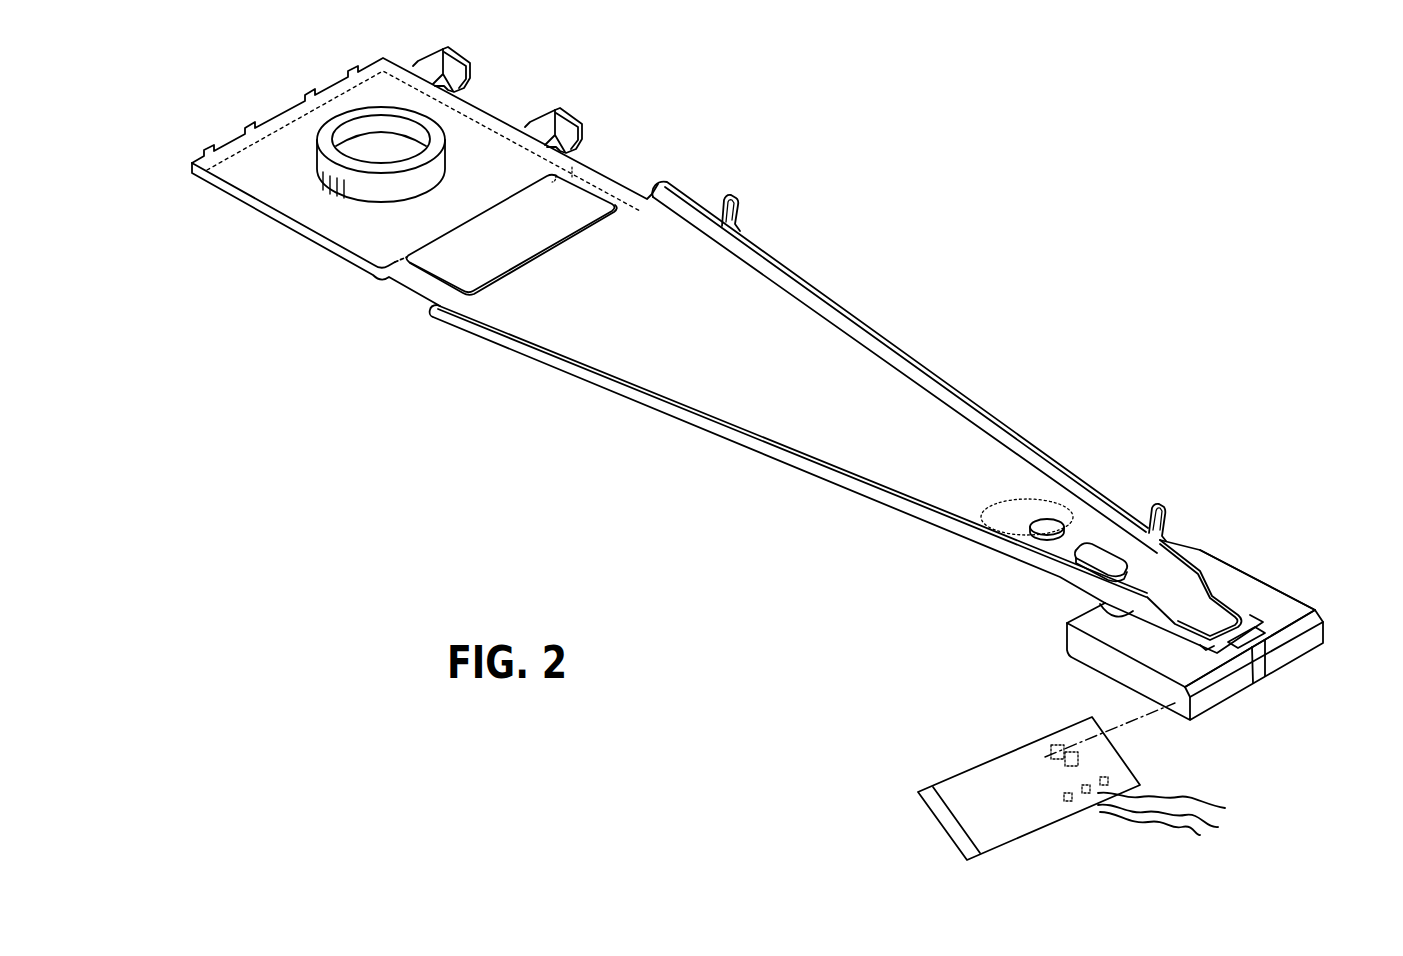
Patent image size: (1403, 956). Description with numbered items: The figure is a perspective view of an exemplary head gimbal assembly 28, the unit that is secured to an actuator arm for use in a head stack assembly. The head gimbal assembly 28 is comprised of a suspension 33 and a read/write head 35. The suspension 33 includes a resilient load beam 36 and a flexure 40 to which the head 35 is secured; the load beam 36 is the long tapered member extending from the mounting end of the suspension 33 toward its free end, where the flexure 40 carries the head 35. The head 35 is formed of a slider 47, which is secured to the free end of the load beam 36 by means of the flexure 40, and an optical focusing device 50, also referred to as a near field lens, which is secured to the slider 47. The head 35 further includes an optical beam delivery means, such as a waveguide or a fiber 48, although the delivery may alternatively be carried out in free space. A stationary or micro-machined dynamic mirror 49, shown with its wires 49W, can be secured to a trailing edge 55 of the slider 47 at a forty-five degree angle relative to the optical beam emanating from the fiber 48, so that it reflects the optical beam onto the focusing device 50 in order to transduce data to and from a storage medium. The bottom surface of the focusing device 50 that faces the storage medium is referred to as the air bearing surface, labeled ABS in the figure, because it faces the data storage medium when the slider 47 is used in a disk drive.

The head gimbal assembly 28 is at (878, 171).
The suspension 33 is at (1047, 432).
The load beam 36 is at (855, 380).
The read/write head 35 is at (1223, 540).
The flexure 40 is at (1100, 604).
The slider 47 is at (1257, 580).
The fiber 48 is at (1259, 626).
The trailing edge 55 is at (1323, 636).
The optical focusing device 50 is at (1260, 673).
The mirror 49 is at (1012, 752).
The wires 49W is at (1250, 829).
The air bearing surface ABS is at (1213, 711).